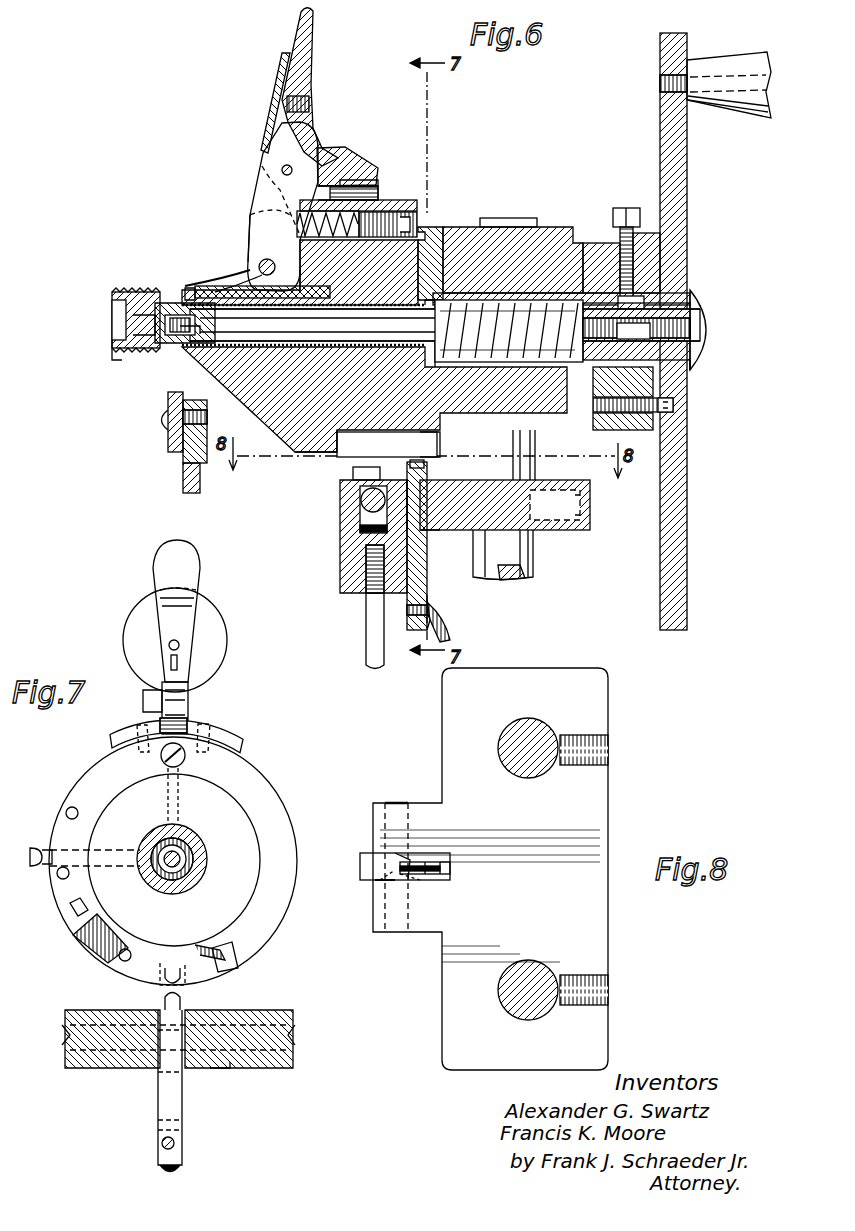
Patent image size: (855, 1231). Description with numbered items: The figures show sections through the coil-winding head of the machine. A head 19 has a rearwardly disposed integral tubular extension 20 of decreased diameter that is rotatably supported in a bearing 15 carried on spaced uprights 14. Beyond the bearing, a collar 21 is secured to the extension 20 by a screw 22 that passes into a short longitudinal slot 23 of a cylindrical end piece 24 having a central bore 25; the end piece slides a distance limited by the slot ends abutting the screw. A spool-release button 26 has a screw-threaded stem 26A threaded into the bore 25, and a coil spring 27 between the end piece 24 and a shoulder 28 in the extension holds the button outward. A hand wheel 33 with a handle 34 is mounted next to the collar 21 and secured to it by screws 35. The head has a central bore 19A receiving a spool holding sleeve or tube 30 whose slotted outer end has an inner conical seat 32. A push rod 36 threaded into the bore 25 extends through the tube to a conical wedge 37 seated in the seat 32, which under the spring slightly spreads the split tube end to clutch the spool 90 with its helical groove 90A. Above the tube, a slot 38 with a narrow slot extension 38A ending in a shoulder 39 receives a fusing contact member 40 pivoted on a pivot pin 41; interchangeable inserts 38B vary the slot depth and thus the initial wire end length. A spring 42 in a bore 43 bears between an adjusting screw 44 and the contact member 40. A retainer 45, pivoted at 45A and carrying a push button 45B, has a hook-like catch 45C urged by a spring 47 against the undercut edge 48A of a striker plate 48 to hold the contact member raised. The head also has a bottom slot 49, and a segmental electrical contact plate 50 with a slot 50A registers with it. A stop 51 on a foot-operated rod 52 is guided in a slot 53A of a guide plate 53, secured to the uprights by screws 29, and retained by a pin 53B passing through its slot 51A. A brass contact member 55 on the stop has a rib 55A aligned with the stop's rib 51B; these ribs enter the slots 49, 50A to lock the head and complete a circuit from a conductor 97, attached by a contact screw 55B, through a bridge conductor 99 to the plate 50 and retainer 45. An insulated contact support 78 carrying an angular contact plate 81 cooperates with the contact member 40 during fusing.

In FIG. 6, the uprights 14 is at (533, 578).
In FIG. 8, the uprights 14 is at (531, 718).
In FIG. 6, the bearing 15 is at (543, 233).
In FIG. 6, the head 19 is at (265, 452).
In FIG. 7, the head 19 is at (80, 783).
In FIG. 6, the central bore 19A is at (210, 340).
In FIG. 6, the tubular extension 20 is at (522, 362).
In FIG. 7, the tubular extension 20 is at (200, 832).
In FIG. 6, the collar 21 is at (650, 256).
In FIG. 6, the screw 22 is at (632, 210).
In FIG. 6, the longitudinal slot 23 is at (645, 302).
In FIG. 6, the cylindrical end piece 24 is at (695, 312).
In FIG. 6, the central bore 25 is at (660, 372).
In FIG. 6, the spool-release button 26 is at (718, 330).
In FIG. 6, the screw-threaded stem 26A is at (706, 345).
In FIG. 6, the coil spring 27 is at (558, 312).
In FIG. 6, the shoulder 28 is at (432, 250).
In FIG. 6, the screws 29 is at (580, 502).
In FIG. 8, the screws 29 is at (608, 742).
In FIG. 6, the spool holding sleeve or tube 30 is at (300, 272).
In FIG. 7, the spool holding sleeve or tube 30 is at (205, 852).
In FIG. 6, the inner conical seat 32 is at (178, 312).
In FIG. 6, the hand wheel 33 is at (678, 165).
In FIG. 6, the handle 34 is at (725, 65).
In FIG. 6, the screws 35 is at (678, 408).
In FIG. 6, the push rod 36 is at (343, 325).
In FIG. 7, the push rod 36 is at (178, 860).
In FIG. 6, the conical member or wedge 37 is at (162, 346).
In FIG. 6, the slot 38 is at (198, 293).
In FIG. 6, the slot extension 38A is at (192, 290).
In FIG. 6, the interchangeable inserts 38B is at (192, 334).
In FIG. 6, the shoulder 39 is at (288, 268).
In FIG. 6, the fusing contact member 40 is at (228, 284).
In FIG. 6, the pivot pin 41 is at (259, 272).
In FIG. 6, the spring 42 is at (356, 216).
In FIG. 6, the bore 43 is at (415, 232).
In FIG. 6, the adjusting screw 44 is at (395, 222).
In FIG. 7, the adjusting screw 44 is at (185, 760).
In FIG. 6, the retainer 45 is at (302, 44).
In FIG. 7, the retainer 45 is at (158, 562).
In FIG. 6, the pivot 45A is at (282, 171).
In FIG. 7, the pivot 45A is at (143, 702).
In FIG. 6, the push button 45B is at (283, 82).
In FIG. 7, the push button 45B is at (145, 618).
In FIG. 6, the hook-like catch 45C is at (355, 196).
In FIG. 7, the hook-like catch 45C is at (188, 722).
In FIG. 6, the spring 47 is at (350, 167).
In FIG. 7, the spring 47 is at (190, 690).
In FIG. 6, the striker plate 48 is at (346, 160).
In FIG. 7, the striker plate 48 is at (243, 738).
In FIG. 6, the undercut edge 48A is at (362, 186).
In FIG. 6, the bottom slot 49 is at (333, 434).
In FIG. 7, the bottom slot 49 is at (230, 972).
In FIG. 6, the segmental electrical contact plate 50 is at (430, 430).
In FIG. 7, the segmental electrical contact plate 50 is at (100, 945).
In FIG. 6, the slot 50A is at (440, 452).
In FIG. 7, the slot 50A is at (163, 982).
In FIG. 6, the stop 51 is at (340, 578).
In FIG. 7, the stop 51 is at (183, 1130).
In FIG. 8, the stop 51 is at (360, 866).
In FIG. 6, the slot 51A is at (362, 530).
In FIG. 8, the slot 51A is at (375, 880).
In FIG. 6, the contact rib 51B is at (355, 472).
In FIG. 8, the contact rib 51B is at (412, 882).
In FIG. 6, the foot-operated rod 52 is at (366, 650).
In FIG. 7, the foot-operated rod 52 is at (182, 1172).
In FIG. 8, the foot-operated rod 52 is at (378, 882).
In FIG. 6, the guide plate 53 is at (555, 528).
In FIG. 7, the guide plate 53 is at (275, 1050).
In FIG. 8, the guide plate 53 is at (590, 712).
In FIG. 6, the slot 53A is at (422, 536).
In FIG. 8, the slot 53A is at (418, 858).
In FIG. 6, the pin 53B is at (362, 505).
In FIG. 7, the pin 53B is at (215, 1068).
In FIG. 8, the pin 53B is at (397, 803).
In FIG. 6, the brass contact member 55 is at (428, 577).
In FIG. 7, the brass contact member 55 is at (156, 1137).
In FIG. 8, the brass contact member 55 is at (445, 876).
In FIG. 6, the contact rib 55A is at (428, 468).
In FIG. 7, the contact rib 55A is at (178, 1005).
In FIG. 8, the contact rib 55A is at (448, 868).
In FIG. 6, the contact screw 55B is at (432, 612).
In FIG. 7, the contact screw 55B is at (163, 1146).
In FIG. 6, the electrical contact support 78 is at (186, 480).
In FIG. 6, the angular contact plate 81 is at (168, 440).
In FIG. 6, the spool or core 90 is at (114, 296).
In FIG. 6, the helical groove or thread 90A is at (112, 356).
In FIG. 6, the conductor 97 is at (446, 633).
In FIG. 7, the bridge conductor 99 is at (72, 910).